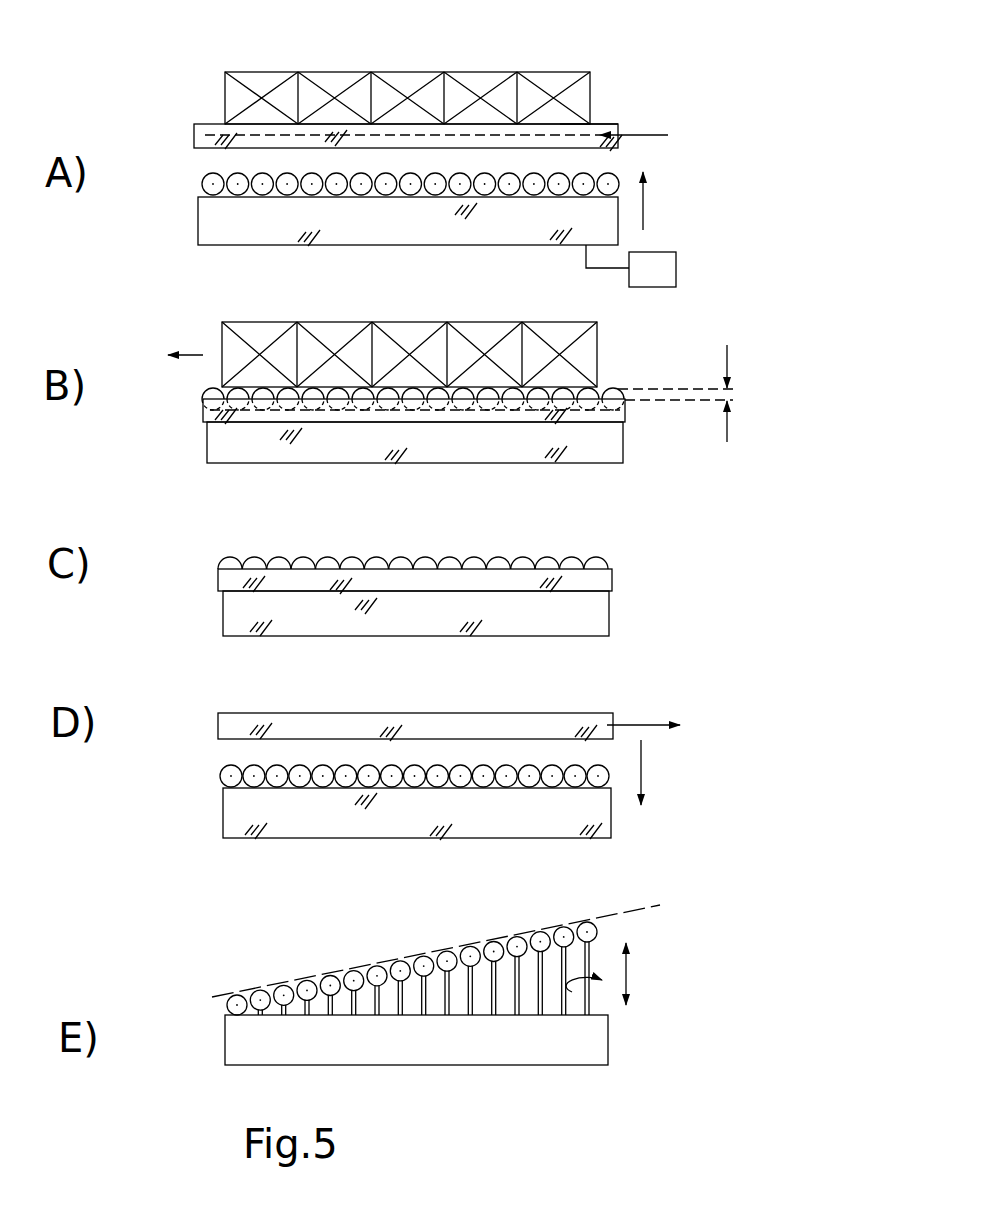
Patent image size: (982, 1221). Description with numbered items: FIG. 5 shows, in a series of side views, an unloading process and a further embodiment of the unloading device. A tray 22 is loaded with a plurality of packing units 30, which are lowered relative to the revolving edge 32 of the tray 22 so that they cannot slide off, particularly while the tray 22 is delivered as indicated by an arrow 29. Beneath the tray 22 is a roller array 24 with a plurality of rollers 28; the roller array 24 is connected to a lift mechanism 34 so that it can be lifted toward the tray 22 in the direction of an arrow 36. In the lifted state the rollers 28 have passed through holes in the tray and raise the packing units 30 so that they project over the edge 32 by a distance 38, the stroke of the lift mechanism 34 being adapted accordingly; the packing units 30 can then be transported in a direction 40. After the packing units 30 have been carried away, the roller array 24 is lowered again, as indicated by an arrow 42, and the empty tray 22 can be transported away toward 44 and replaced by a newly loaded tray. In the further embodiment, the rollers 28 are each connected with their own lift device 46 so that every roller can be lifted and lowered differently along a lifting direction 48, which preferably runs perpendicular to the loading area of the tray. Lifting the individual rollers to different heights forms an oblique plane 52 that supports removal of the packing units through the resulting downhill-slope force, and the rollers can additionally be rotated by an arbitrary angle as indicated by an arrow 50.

The tray 22 is at (217, 133).
The roller array 24 is at (194, 208).
The rollers 28 is at (397, 196).
The arrow indicating tray delivery 29 is at (665, 135).
The packing units 30 is at (557, 86).
The revolving edge 32 is at (608, 122).
The lift mechanism 34 is at (643, 279).
The arrow indicating lifting of roller array 36 is at (645, 203).
The distance 38 is at (730, 397).
The transport direction 40 is at (203, 353).
The arrow indicating lowering of roller array 42 is at (642, 762).
The direction of tray removal 44 is at (652, 723).
The lift device 46 is at (490, 986).
The lifting direction 48 is at (627, 967).
The arrow indicating roller rotation 50 is at (569, 997).
The oblique plane 52 is at (642, 910).